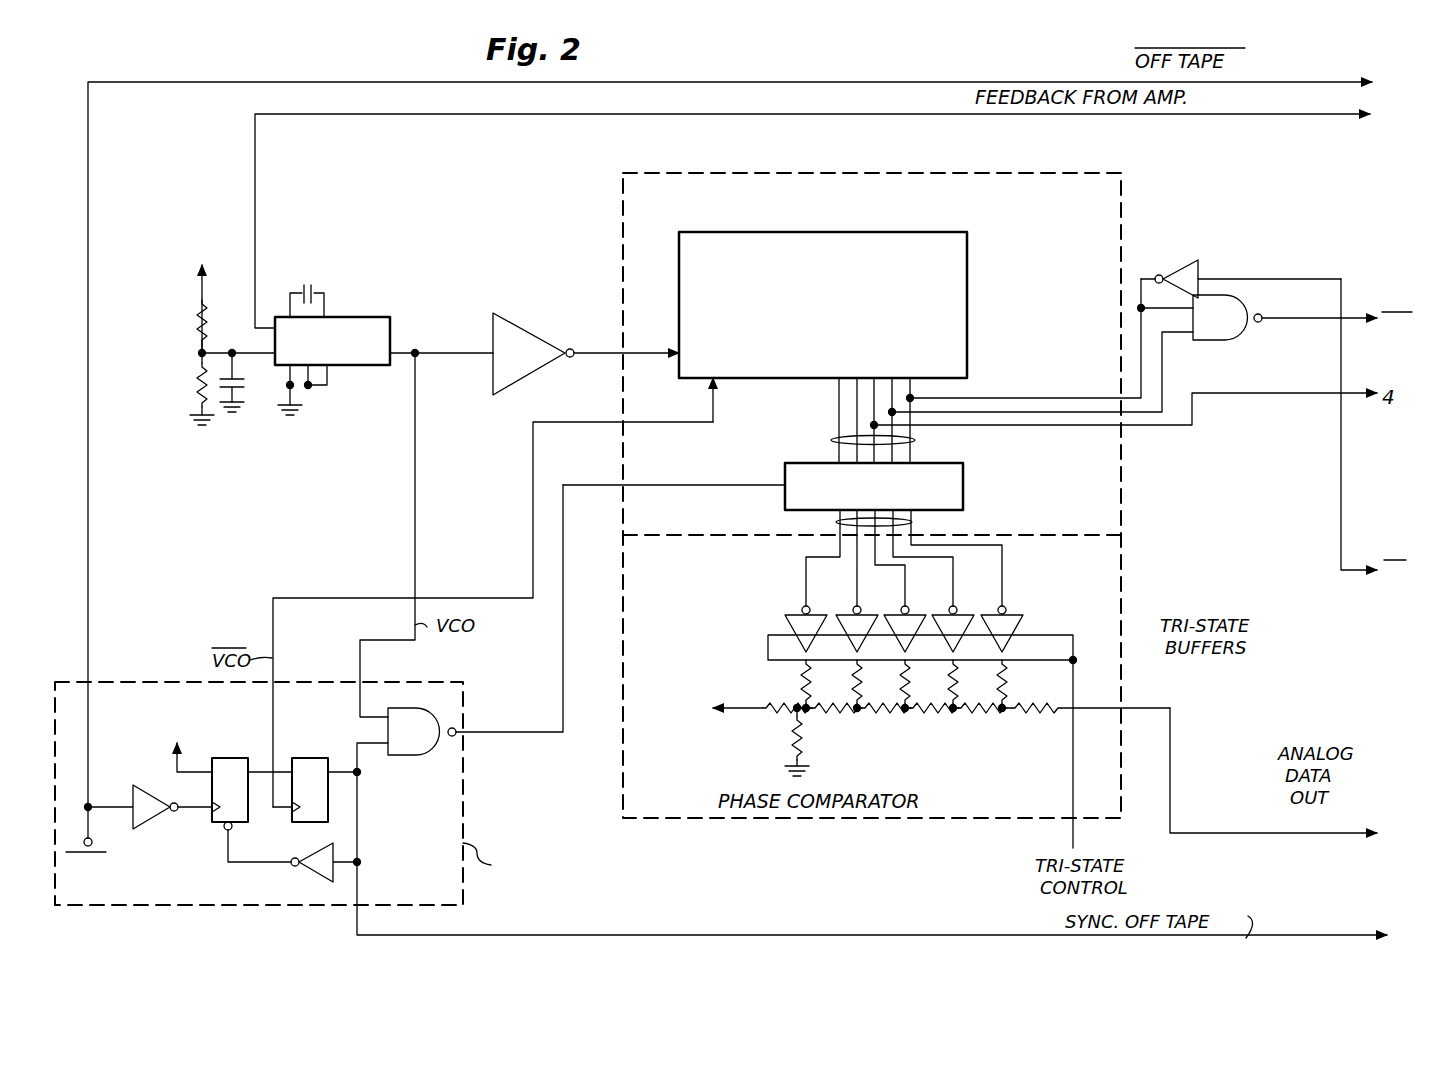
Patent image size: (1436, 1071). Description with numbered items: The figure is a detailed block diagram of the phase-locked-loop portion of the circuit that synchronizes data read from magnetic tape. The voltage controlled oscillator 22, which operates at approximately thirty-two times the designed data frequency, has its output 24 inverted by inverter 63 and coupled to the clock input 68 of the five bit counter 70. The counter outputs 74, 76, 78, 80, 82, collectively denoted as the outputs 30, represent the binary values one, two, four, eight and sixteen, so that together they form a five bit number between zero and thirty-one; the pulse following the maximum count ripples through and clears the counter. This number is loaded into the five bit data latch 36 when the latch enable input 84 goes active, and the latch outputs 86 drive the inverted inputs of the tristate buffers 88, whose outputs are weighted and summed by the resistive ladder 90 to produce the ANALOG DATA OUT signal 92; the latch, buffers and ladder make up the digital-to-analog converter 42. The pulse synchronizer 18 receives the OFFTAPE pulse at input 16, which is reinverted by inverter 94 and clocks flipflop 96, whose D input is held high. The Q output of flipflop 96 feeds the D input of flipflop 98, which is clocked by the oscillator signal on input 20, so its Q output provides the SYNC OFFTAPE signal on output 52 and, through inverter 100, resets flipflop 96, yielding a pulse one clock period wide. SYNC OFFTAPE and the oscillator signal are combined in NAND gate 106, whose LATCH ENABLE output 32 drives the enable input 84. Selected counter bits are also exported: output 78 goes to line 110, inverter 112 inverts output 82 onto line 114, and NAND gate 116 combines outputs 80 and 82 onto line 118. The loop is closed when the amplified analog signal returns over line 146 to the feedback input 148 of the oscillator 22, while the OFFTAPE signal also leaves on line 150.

The input 16 is at (88, 744).
The synchronizing circuit 18 is at (463, 786).
The input 20 is at (360, 660).
The voltage controlled oscillator 22 is at (366, 323).
The output 24 is at (415, 354).
The outputs 30 is at (806, 444).
The output 32 is at (480, 732).
The five bit data latch 36 is at (966, 466).
The digital-to-analog converter 42 is at (1121, 548).
The output 52 is at (426, 934).
The inverter 63 is at (538, 337).
The clock input 68 is at (668, 346).
The five bit counter 70 is at (678, 288).
The output 74 is at (839, 386).
The output 76 is at (856, 402).
The output 78 is at (872, 410).
The output 80 is at (928, 386).
The output 82 is at (908, 430).
The latch enable input 84 is at (780, 482).
The outputs 86 is at (912, 520).
The tristate buffers 88 is at (1030, 618).
The resistive ladder 90 is at (957, 714).
The ANALOG DATA OUT signal 92 is at (1218, 812).
The inverter 94 is at (158, 814).
The flipflop 96 is at (212, 780).
The flipflop 98 is at (328, 800).
The inverter 100 is at (308, 846).
The NAND gate 106 is at (448, 710).
The line 110 is at (1330, 396).
The inverter 112 is at (1186, 281).
The line 114 is at (1341, 458).
The NAND gate 116 is at (1242, 336).
The line 118 is at (1356, 312).
The line 146 is at (894, 92).
The feedback input 148 is at (268, 324).
The off tape line 150 is at (856, 58).